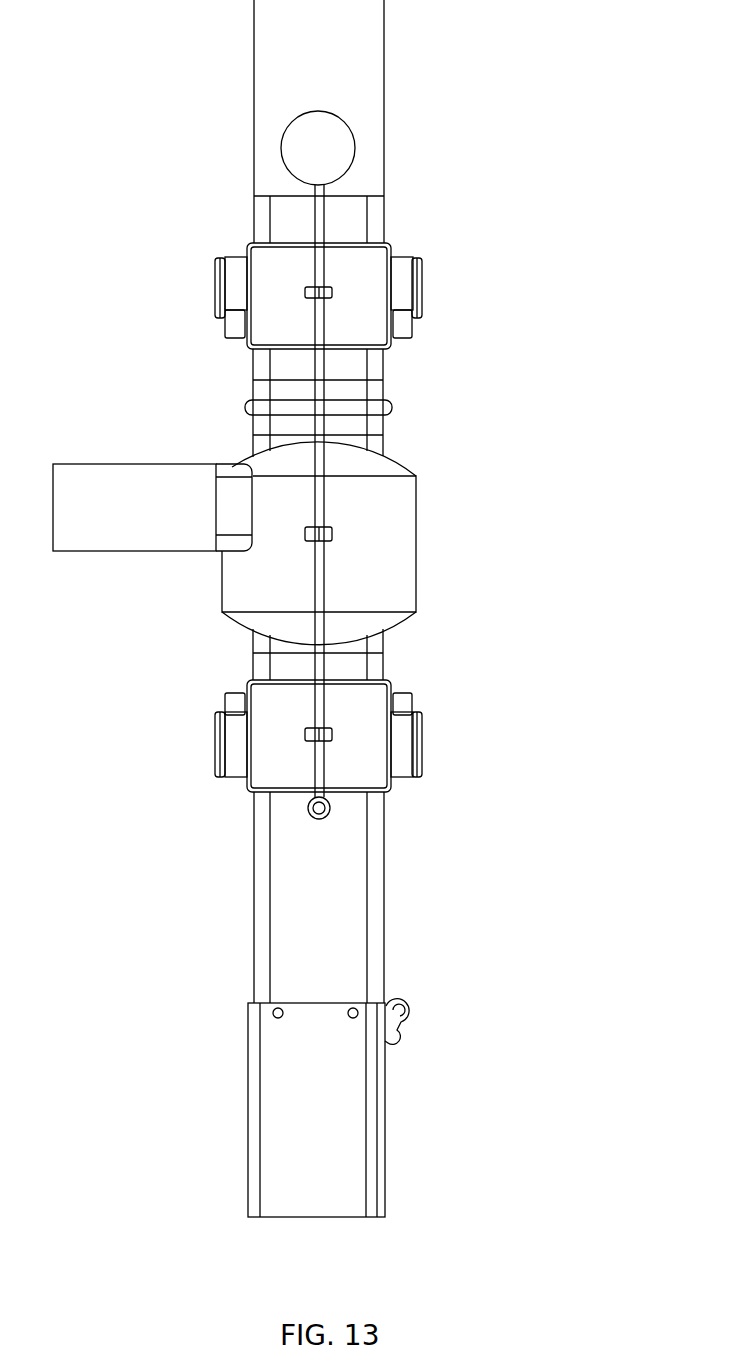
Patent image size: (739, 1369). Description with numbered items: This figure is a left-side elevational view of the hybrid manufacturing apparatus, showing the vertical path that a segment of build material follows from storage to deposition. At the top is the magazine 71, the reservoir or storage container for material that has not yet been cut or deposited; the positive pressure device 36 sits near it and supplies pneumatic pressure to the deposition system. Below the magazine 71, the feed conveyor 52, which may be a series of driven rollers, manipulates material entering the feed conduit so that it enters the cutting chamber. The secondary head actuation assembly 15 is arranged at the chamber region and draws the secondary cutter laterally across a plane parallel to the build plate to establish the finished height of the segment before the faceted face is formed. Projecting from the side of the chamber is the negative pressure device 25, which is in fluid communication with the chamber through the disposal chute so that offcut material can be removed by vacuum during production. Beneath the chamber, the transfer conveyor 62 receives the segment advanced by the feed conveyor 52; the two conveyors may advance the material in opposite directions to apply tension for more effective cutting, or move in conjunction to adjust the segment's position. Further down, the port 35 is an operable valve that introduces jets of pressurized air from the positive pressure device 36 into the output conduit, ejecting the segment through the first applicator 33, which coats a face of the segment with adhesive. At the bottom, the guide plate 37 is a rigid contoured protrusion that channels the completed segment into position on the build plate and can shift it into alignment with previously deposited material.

The magazine 71 is at (363, 70).
The positive pressure device 36 is at (296, 148).
The feed conveyor 52 is at (422, 318).
The secondary head actuation assembly 15 is at (248, 406).
The negative pressure device 25 is at (118, 537).
The transfer conveyor 62 is at (422, 748).
The port 35 is at (320, 822).
The guide plate 37 is at (245, 1125).
The first applicator 33 is at (410, 1018).